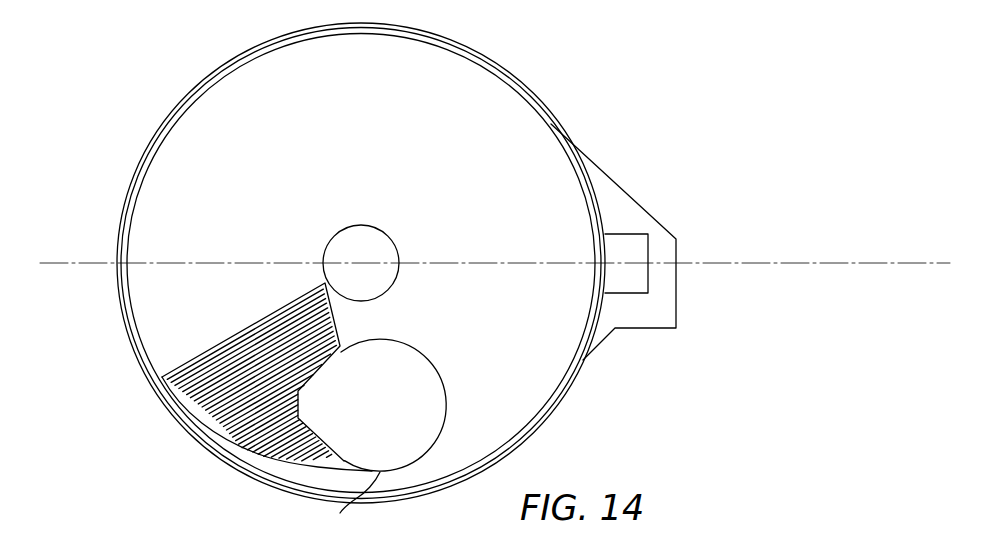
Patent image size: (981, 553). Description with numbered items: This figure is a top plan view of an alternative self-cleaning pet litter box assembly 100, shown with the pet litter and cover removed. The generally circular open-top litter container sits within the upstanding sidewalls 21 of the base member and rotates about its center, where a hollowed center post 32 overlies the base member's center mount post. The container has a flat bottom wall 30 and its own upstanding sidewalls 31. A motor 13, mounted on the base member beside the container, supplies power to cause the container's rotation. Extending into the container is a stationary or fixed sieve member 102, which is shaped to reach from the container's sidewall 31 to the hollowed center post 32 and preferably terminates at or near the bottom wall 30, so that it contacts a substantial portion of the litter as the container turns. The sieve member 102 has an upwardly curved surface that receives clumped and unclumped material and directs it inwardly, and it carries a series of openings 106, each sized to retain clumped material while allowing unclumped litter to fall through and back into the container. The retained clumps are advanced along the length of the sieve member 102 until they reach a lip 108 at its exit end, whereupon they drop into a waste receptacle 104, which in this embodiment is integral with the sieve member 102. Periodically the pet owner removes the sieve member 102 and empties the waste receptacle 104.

The motor 13 is at (633, 268).
The upstanding sidewalls 21 is at (455, 41).
The flat bottom wall 30 is at (374, 163).
The upstanding sidewalls 31 is at (460, 56).
The hollowed center post 32 is at (386, 231).
The self-cleaning pet litter box assembly 100 is at (104, 308).
The sieve member 102 is at (208, 420).
The waste receptacle 104 is at (340, 513).
The openings 106 is at (210, 356).
The lip 108 is at (333, 363).